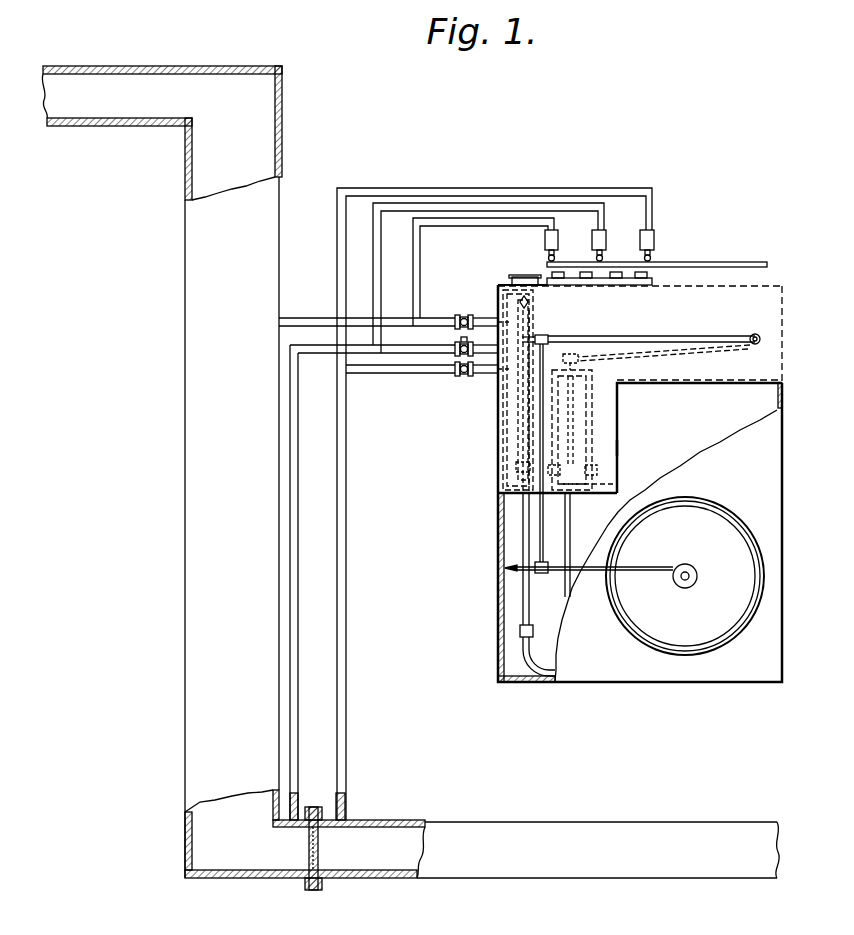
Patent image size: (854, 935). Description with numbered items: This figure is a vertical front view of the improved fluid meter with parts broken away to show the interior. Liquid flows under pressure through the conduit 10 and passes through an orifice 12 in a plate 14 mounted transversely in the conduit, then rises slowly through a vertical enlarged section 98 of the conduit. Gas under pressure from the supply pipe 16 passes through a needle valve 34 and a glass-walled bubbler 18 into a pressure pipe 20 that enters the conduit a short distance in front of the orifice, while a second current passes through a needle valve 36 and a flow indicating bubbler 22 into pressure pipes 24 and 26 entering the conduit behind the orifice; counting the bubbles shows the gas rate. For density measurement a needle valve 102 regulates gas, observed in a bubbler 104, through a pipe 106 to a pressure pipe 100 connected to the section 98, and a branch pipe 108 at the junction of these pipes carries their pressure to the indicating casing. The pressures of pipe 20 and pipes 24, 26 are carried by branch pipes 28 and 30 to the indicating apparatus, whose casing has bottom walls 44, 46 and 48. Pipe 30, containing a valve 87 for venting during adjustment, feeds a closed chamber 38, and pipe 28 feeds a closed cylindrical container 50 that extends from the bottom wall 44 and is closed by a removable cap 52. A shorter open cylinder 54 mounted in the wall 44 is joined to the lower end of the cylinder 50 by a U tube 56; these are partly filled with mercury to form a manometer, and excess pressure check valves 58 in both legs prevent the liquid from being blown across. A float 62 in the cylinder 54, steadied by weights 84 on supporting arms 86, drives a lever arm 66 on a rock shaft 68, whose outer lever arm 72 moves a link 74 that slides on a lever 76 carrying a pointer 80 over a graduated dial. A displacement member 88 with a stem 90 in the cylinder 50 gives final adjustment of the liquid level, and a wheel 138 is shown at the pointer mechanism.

The conduit 10 is at (130, 66).
The vertical enlarged section 98 is at (186, 465).
The orifice 12 is at (308, 845).
The plate 14 is at (320, 858).
The pressure pipe 20 is at (548, 190).
The pressure pipe 24 is at (415, 203).
The pipe 106 is at (420, 266).
The pressure pipe 100 is at (292, 318).
The branch pipe 30 is at (399, 353).
The pressure pipe 26 is at (300, 410).
The branch pipe 28 is at (377, 373).
The branch pipe 108 is at (484, 318).
The valve 87 is at (460, 357).
The bubbler 104 is at (545, 241).
The needle valve 102 is at (555, 258).
The flow indicating bubbler 22 is at (606, 233).
The needle valve 36 is at (603, 258).
The bubbler 18 is at (657, 240).
The needle valve 34 is at (651, 258).
The supply pipe 16 is at (735, 262).
The removable cap 52 is at (512, 280).
The closed chamber 38 is at (748, 300).
The bottom wall 48 is at (705, 385).
The bottom wall 44 is at (590, 495).
The closed cylindrical container 50 is at (518, 413).
The displacement member 88 is at (518, 468).
The stem 90 is at (536, 322).
The link 74 is at (544, 507).
The lever arm 72 is at (653, 336).
The rock shaft 68 is at (757, 346).
The lever arm 66 is at (652, 353).
The supporting arms 86 is at (580, 361).
The float 62 is at (572, 438).
The weights 84 is at (594, 465).
The bottom wall 46 is at (619, 447).
The cylinder 54 is at (618, 483).
The U tube 56 is at (571, 540).
The lever 76 is at (518, 575).
The pointer 80 is at (628, 571).
The wheel 138 is at (678, 568).
The excess pressure check valves 58 is at (534, 631).